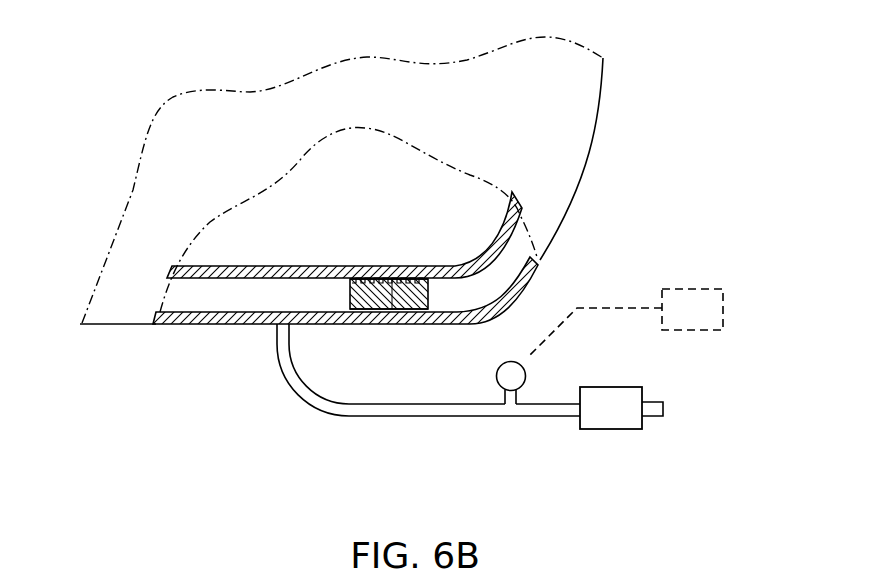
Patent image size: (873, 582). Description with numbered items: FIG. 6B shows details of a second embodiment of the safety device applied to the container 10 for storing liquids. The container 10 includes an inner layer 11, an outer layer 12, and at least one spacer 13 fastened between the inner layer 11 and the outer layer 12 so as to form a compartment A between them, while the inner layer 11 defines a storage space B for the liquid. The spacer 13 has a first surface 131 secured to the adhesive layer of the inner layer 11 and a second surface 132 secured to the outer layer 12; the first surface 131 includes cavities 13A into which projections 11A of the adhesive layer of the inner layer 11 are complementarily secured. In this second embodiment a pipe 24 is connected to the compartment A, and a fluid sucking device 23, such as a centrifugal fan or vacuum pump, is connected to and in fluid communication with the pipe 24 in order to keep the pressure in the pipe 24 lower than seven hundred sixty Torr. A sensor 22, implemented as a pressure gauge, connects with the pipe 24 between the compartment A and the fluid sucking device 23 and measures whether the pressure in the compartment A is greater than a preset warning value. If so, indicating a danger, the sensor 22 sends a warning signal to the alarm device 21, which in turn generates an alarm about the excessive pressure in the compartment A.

The container 10 is at (180, 332).
The inner layer 11 is at (305, 270).
The projections 11A is at (371, 285).
The outer layer 12 is at (512, 292).
The spacer 13 is at (423, 290).
The cavities 13A is at (380, 277).
The first surface 131 is at (396, 280).
The second surface 132 is at (397, 311).
The alarm device 21 is at (698, 330).
The sensor 22 is at (517, 376).
The fluid sucking device 23 is at (600, 420).
The pipe 24 is at (474, 408).
The compartment A is at (187, 290).
The storage space B is at (230, 240).